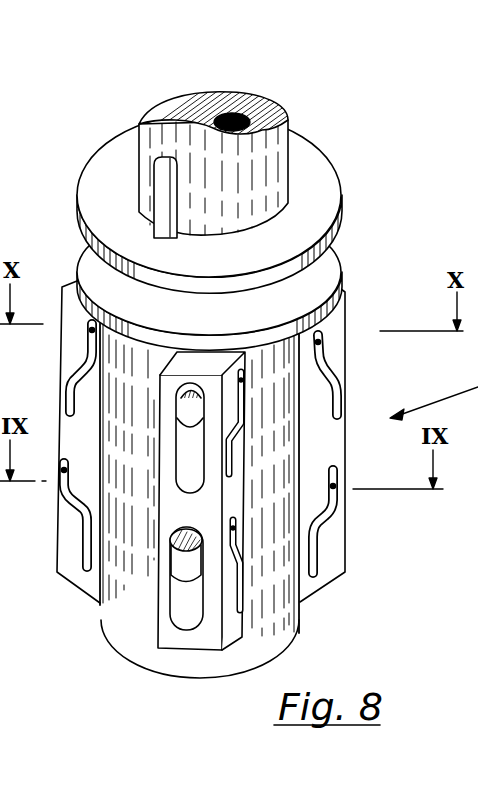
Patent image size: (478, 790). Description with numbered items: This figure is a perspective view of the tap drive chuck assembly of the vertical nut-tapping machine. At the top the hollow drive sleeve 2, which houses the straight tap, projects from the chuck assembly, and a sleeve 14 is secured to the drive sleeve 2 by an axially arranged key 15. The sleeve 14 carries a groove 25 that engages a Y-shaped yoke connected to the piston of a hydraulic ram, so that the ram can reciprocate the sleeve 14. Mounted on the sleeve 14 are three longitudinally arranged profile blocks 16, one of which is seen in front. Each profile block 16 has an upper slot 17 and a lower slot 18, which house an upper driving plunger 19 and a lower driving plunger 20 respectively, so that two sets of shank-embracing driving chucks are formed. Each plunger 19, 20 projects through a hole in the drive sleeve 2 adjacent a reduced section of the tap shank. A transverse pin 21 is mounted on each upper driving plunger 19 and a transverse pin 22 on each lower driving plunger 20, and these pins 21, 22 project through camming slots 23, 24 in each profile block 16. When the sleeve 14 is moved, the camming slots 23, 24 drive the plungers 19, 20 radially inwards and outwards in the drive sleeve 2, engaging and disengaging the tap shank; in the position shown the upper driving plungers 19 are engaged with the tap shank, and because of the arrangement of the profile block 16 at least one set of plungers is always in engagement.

The hollow drive sleeve 2 is at (265, 103).
The sleeve 14 is at (272, 397).
The key 15 is at (163, 200).
The profile block 16 is at (339, 345).
The upper slot 17 is at (183, 452).
The lower slot 18 is at (180, 612).
The upper driving plunger 19 is at (183, 406).
The lower driving plunger 20 is at (177, 563).
The transverse pin 21 is at (331, 352).
The transverse pin 22 is at (334, 488).
The camming slot 23 is at (338, 414).
The camming slot 24 is at (314, 544).
The groove 25 is at (333, 248).